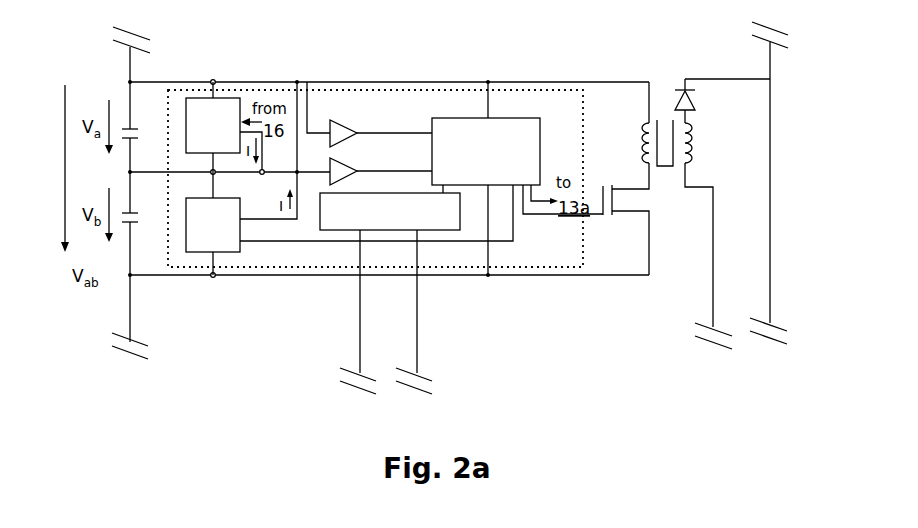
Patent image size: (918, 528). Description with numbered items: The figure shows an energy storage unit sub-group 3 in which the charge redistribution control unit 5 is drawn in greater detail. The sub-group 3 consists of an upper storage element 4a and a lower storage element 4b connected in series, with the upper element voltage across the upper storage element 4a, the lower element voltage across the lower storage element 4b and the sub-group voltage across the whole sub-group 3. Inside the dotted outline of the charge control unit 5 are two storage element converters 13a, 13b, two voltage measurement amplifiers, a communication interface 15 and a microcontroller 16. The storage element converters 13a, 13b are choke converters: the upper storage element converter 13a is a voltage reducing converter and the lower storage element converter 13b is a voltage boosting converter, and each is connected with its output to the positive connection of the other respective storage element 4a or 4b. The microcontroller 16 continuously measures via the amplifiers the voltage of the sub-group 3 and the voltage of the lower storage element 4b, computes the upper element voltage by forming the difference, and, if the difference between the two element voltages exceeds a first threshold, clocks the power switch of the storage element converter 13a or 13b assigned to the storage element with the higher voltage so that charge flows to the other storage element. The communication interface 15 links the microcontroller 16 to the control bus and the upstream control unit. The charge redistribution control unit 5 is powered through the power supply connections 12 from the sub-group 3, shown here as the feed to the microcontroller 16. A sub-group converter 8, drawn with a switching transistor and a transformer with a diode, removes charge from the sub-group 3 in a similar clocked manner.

The energy storage unit sub-group 3 is at (616, 387).
The upper storage element 4a is at (144, 137).
The lower storage element 4b is at (145, 221).
The charge redistribution control unit 5 is at (591, 141).
The sub-group converter 8 is at (667, 246).
The power supply connections 12 is at (488, 82).
The upper storage element converter 13a is at (225, 128).
The lower storage element converter 13b is at (349, 178).
The communication interface 15 is at (390, 283).
The microcontroller 16 is at (517, 166).